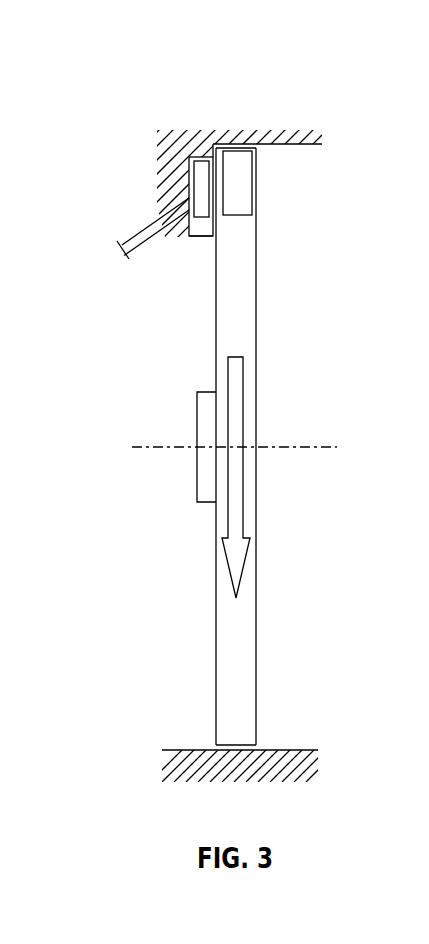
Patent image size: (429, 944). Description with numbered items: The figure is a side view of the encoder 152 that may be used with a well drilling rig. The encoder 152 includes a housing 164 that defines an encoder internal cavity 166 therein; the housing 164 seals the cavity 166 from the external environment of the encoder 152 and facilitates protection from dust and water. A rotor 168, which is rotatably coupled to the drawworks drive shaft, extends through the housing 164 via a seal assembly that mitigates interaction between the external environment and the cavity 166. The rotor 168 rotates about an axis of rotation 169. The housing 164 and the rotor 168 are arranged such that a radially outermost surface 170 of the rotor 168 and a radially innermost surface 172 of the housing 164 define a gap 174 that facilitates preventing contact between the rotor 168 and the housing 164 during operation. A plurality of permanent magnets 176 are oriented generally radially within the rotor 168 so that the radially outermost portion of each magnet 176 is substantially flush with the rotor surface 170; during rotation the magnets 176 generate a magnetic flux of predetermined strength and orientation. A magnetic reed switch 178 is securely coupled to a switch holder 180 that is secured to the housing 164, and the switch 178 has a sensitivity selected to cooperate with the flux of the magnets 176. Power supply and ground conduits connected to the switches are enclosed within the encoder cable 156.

The encoder 152 is at (145, 93).
The encoder cable 156 is at (148, 226).
The housing 164 is at (266, 133).
The encoder internal cavity 166 is at (327, 670).
The rotor 168 is at (245, 626).
The axis of rotation 169 is at (167, 448).
The radially outermost surface 170 is at (258, 153).
The radially innermost surface 172 is at (303, 151).
The gap 174 is at (268, 154).
The permanent magnet 176 is at (238, 207).
The magnetic reed switch 178 is at (200, 185).
The switch holder 180 is at (198, 238).